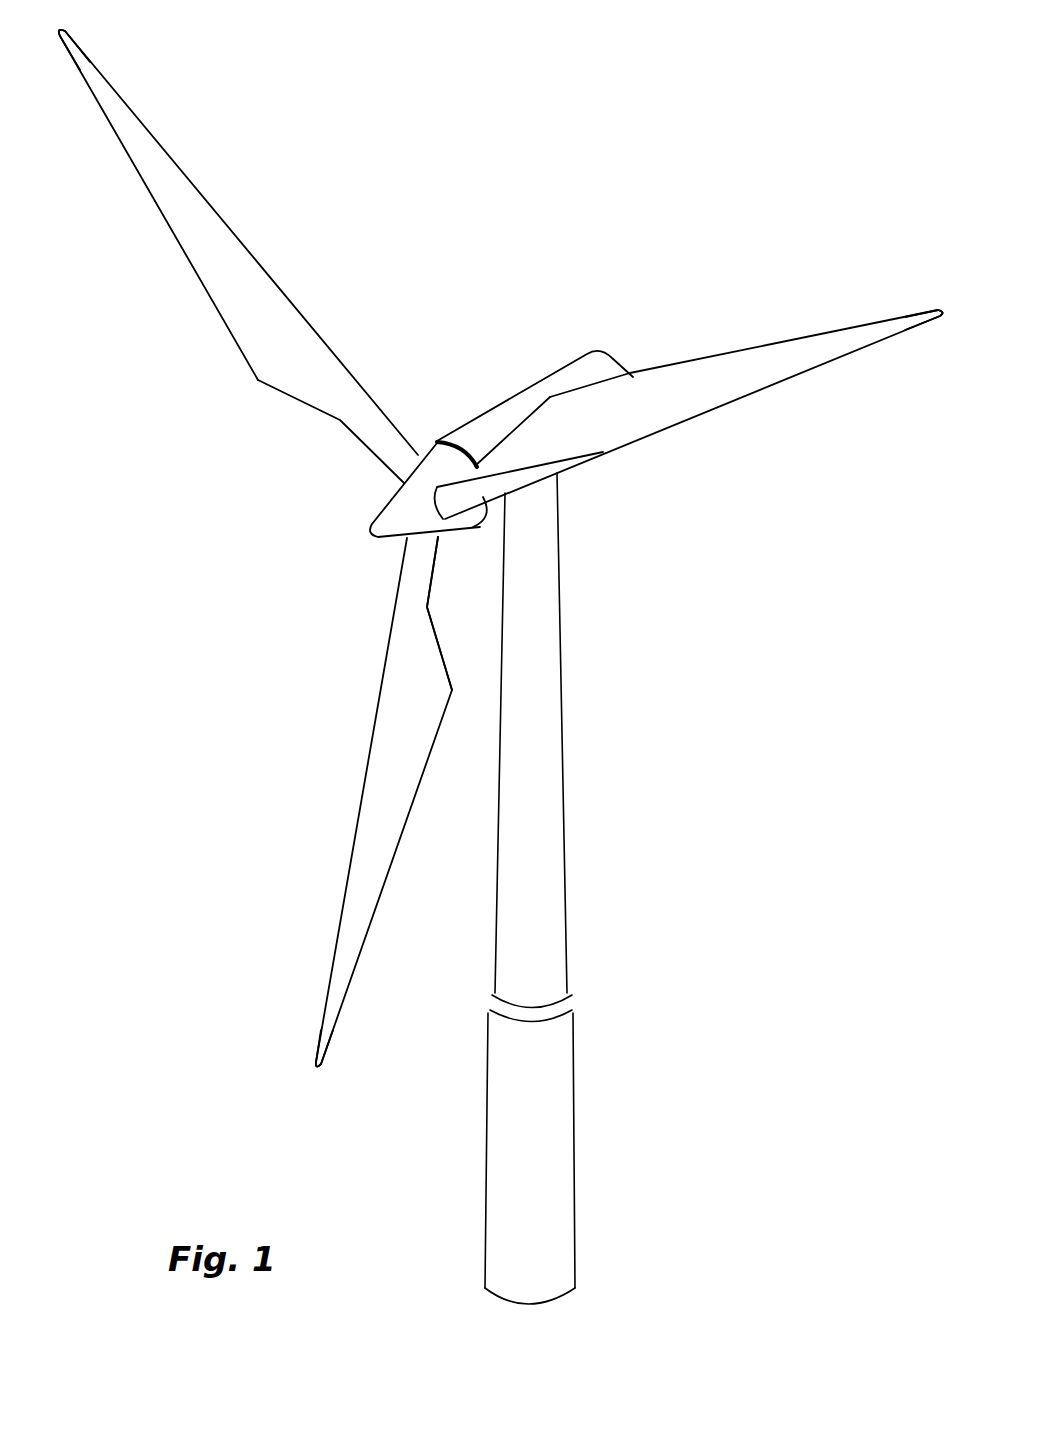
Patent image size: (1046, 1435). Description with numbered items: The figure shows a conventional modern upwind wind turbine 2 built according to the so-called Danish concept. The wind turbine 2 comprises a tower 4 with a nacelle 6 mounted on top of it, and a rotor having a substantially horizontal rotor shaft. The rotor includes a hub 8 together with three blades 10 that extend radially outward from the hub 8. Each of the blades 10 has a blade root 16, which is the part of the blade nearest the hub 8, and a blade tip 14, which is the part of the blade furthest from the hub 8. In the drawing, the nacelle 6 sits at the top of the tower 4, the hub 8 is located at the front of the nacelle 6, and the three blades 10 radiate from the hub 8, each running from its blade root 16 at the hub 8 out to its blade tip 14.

The wind turbine 2 is at (676, 825).
The tower 4 is at (550, 742).
The nacelle 6 is at (493, 422).
The hub 8 is at (392, 512).
The blades 10 is at (272, 352).
The blade tip 14 is at (104, 91).
The blade root 16 is at (398, 463).